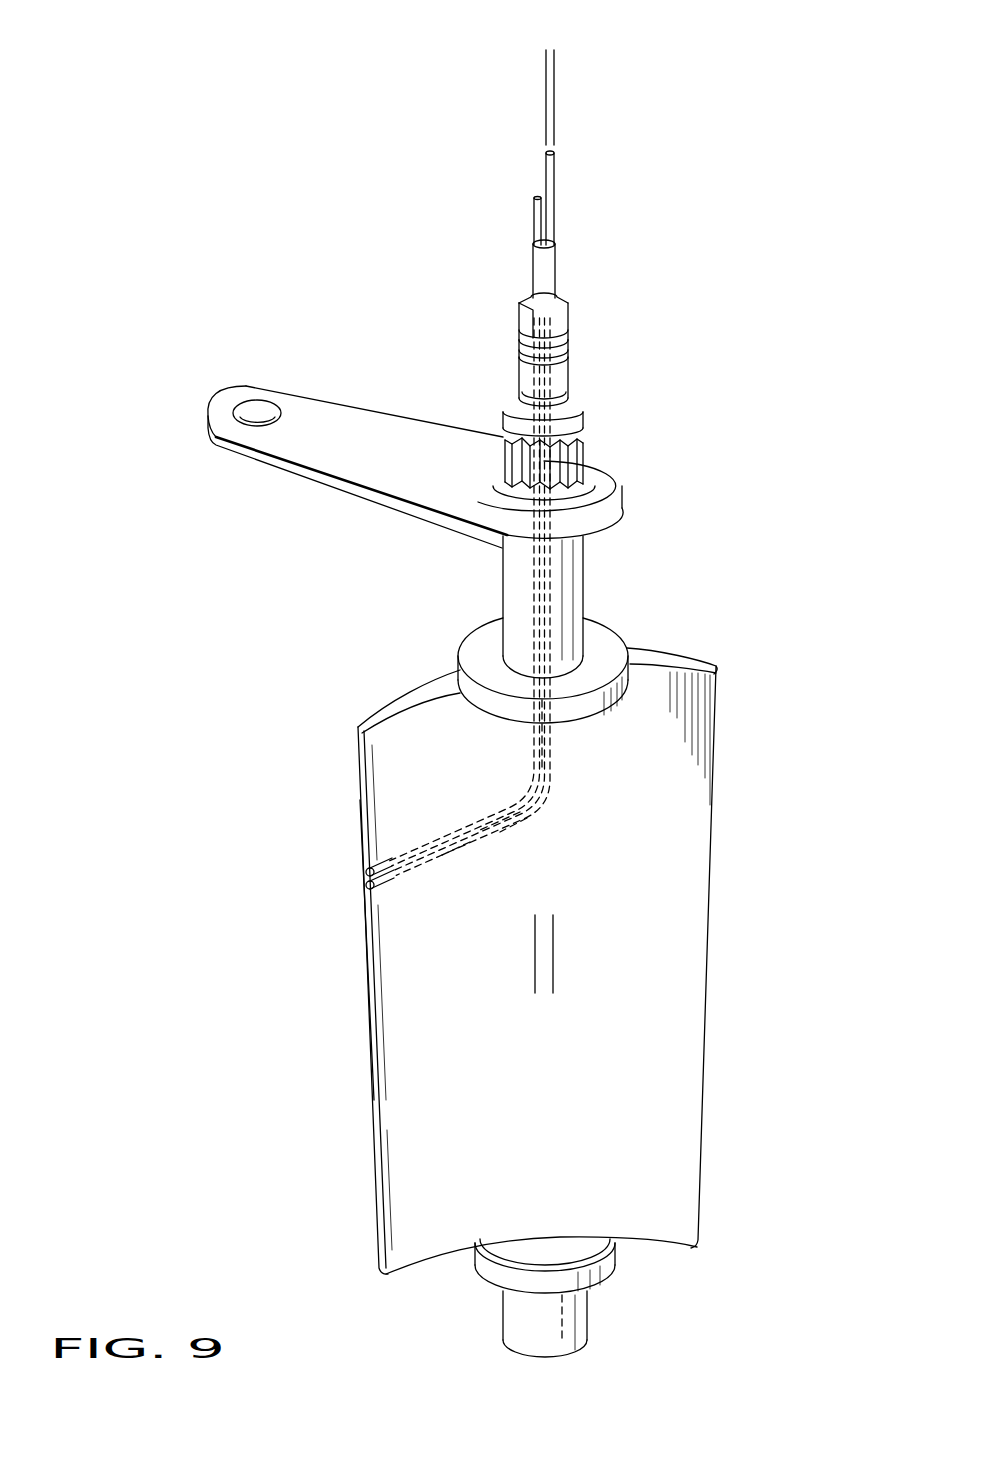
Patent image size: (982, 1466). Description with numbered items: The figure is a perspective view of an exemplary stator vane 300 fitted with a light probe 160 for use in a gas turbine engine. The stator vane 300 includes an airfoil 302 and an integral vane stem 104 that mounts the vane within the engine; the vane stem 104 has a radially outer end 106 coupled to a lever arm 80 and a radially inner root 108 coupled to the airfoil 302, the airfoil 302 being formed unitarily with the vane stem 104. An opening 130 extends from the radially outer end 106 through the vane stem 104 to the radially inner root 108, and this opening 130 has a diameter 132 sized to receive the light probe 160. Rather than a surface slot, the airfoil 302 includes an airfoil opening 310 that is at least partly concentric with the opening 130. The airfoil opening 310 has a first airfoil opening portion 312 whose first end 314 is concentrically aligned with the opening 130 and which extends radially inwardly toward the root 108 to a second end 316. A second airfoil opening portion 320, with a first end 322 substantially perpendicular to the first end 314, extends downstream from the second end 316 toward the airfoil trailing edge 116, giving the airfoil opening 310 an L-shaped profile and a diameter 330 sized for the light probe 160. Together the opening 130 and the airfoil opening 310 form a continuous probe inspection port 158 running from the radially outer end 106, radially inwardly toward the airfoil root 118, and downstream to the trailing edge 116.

The diameter 132 is at (490, 50).
The light probe 160 is at (556, 257).
The opening 130 is at (568, 308).
The radially outer end 106 is at (569, 328).
The vane stem 104 is at (569, 372).
The lever arm 80 is at (335, 425).
The stator vane 300 is at (757, 470).
The radially inner root 108 is at (584, 640).
The first end 314 is at (524, 654).
The first airfoil opening portion 312 is at (553, 735).
The airfoil opening 310 is at (552, 790).
The second end 316 is at (540, 812).
The first end 322 is at (536, 818).
The second airfoil opening portion 320 is at (452, 845).
The diameter 330 is at (478, 987).
The airfoil 302 is at (550, 1083).
The probe inspection port 158 is at (340, 895).
The trailing edge 116 is at (364, 1082).
The airfoil root 118 is at (437, 1257).